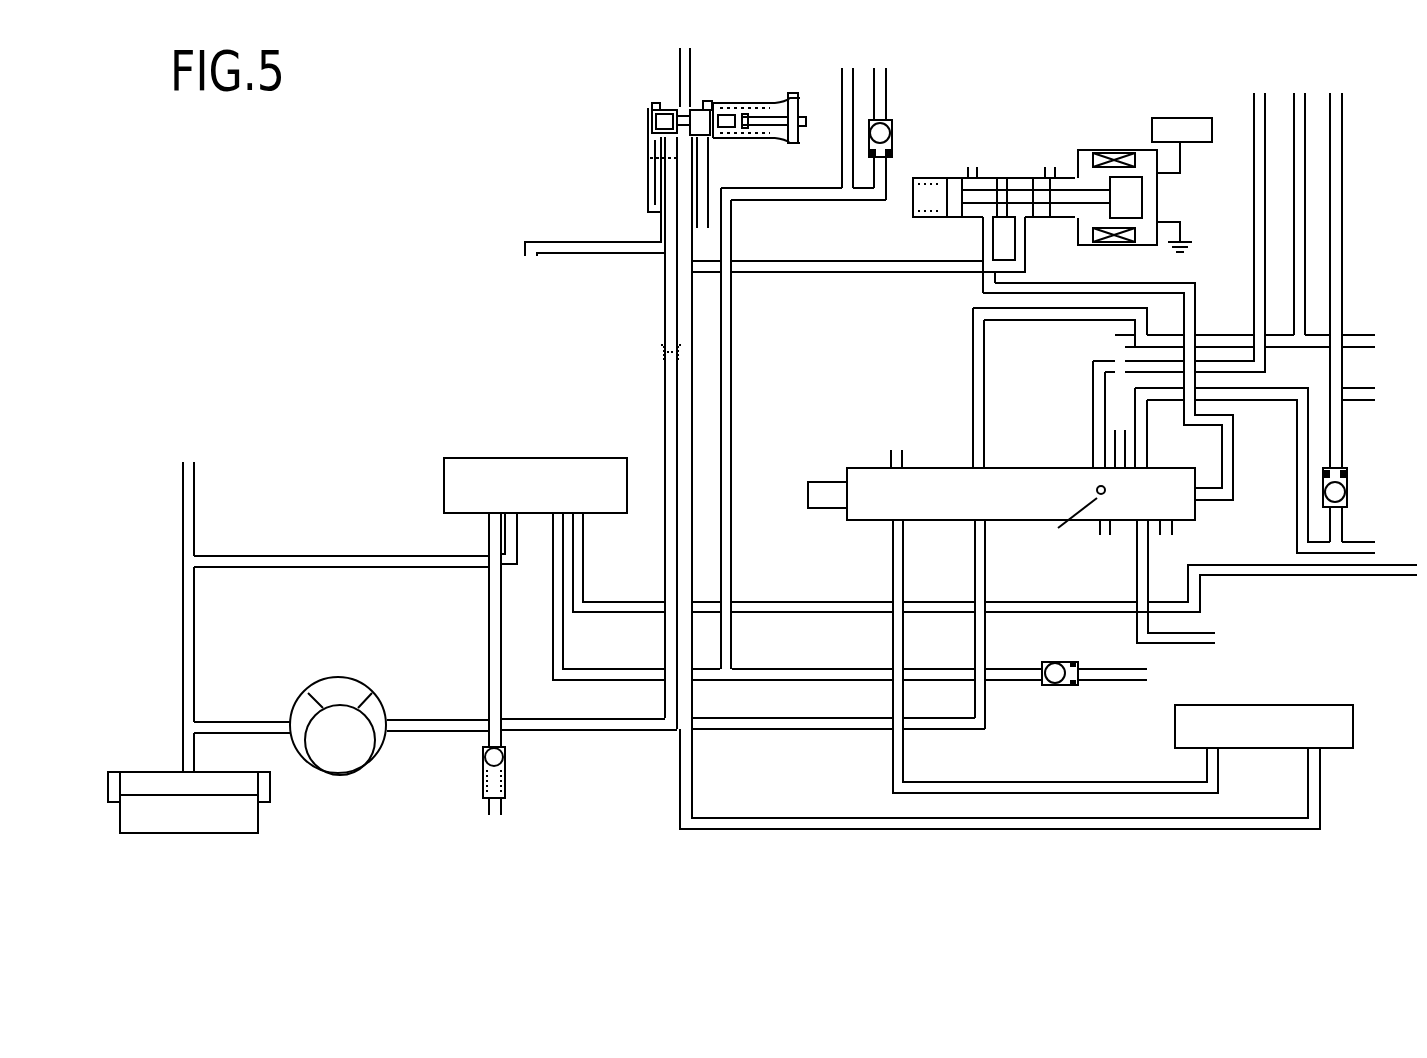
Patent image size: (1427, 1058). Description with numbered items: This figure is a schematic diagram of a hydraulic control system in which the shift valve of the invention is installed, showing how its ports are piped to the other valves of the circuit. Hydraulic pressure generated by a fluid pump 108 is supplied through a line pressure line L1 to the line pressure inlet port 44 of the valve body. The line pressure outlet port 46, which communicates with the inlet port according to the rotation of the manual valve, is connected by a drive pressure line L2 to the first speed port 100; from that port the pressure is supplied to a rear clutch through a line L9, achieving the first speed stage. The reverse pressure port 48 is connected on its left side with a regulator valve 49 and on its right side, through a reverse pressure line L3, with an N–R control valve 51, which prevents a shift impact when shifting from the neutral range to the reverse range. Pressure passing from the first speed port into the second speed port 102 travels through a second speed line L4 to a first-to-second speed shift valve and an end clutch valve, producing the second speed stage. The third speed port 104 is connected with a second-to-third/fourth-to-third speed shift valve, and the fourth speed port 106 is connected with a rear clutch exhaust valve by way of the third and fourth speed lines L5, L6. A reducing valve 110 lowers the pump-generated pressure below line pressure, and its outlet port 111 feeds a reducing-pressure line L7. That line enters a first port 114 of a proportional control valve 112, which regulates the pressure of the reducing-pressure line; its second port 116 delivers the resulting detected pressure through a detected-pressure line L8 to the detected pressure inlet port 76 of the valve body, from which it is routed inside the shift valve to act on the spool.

The line pressure inlet port 44 is at (982, 523).
The line pressure outlet port 46 is at (978, 462).
The reverse pressure port 48 is at (893, 523).
The regulator valve 49 is at (535, 458).
The N–R control valve 51 is at (1263, 705).
The detected pressure inlet port 76 is at (1202, 495).
The first speed port 100 is at (1142, 463).
The second speed port 102 is at (1145, 530).
The third speed port 104 is at (1100, 445).
The fourth speed port 106 is at (1100, 463).
The fluid pump 108 is at (338, 677).
The reducing valve 110 is at (748, 107).
The outlet port 111 is at (685, 137).
The proportional control valve 112 is at (1020, 178).
The first port 114 is at (1020, 222).
The second port 116 is at (988, 222).
The line pressure line L1 is at (803, 723).
The drive pressure line L2 is at (973, 372).
The reverse pressure line L3 is at (903, 640).
The second speed line L4 is at (1190, 640).
The third speed line L5 is at (1300, 342).
The fourth speed line L6 is at (1254, 188).
The reducing-pressure line L7 is at (665, 412).
The detected-pressure line L8 is at (1195, 305).
The line L9 is at (1262, 400).